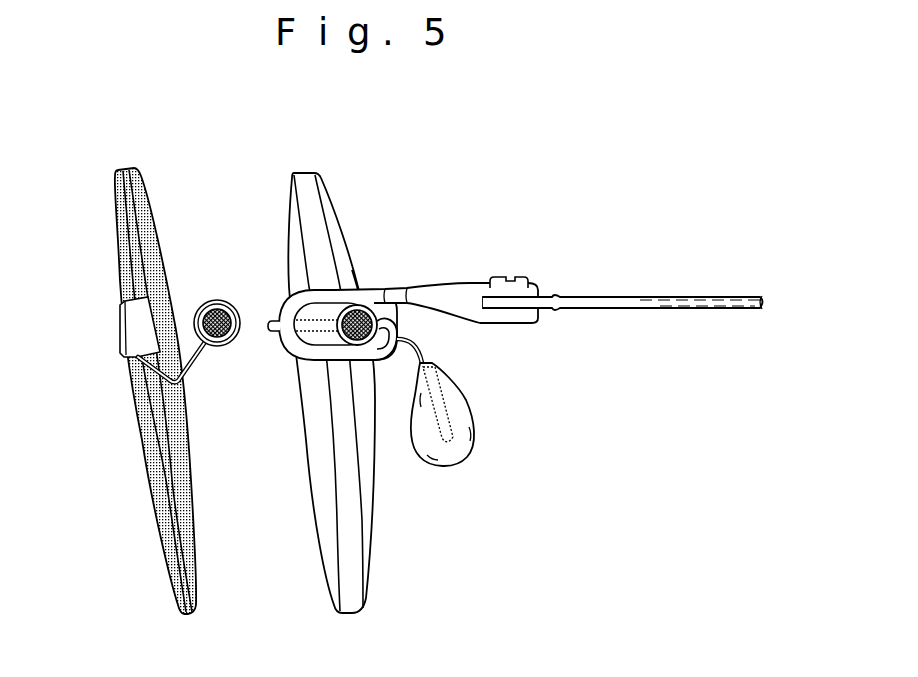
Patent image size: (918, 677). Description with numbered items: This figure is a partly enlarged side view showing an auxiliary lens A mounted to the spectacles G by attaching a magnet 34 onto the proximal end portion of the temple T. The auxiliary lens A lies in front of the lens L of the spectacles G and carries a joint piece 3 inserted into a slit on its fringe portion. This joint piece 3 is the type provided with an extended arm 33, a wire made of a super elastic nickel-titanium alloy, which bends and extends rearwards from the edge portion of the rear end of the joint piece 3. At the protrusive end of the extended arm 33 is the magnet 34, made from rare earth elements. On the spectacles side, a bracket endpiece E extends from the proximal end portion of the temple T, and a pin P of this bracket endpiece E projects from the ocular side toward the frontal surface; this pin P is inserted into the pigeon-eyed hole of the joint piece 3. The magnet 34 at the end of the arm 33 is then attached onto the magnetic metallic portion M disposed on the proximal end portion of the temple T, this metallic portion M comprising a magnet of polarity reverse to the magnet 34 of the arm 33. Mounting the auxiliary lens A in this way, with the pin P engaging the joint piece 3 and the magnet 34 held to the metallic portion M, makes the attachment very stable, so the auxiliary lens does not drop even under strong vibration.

The joint piece 3 is at (120, 333).
The extended arm 33 is at (165, 387).
The magnet 34 is at (217, 322).
The auxiliary lens A is at (148, 483).
The pin P is at (272, 320).
The magnetic metallic portion M is at (357, 327).
The bracket endpiece E is at (362, 293).
The spectacles G is at (358, 251).
The temple T is at (580, 304).
The lens L is at (313, 507).